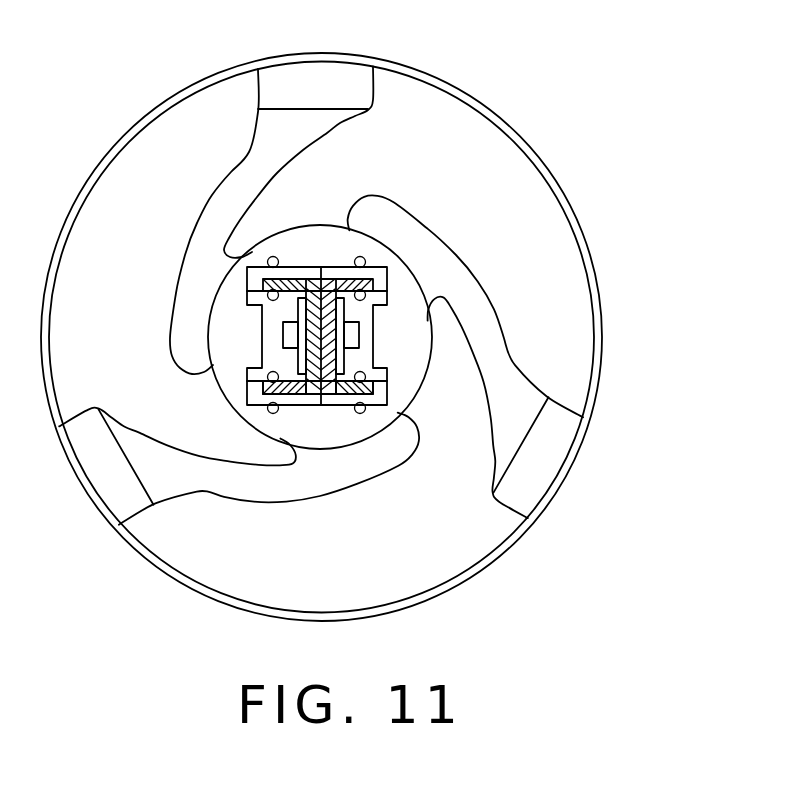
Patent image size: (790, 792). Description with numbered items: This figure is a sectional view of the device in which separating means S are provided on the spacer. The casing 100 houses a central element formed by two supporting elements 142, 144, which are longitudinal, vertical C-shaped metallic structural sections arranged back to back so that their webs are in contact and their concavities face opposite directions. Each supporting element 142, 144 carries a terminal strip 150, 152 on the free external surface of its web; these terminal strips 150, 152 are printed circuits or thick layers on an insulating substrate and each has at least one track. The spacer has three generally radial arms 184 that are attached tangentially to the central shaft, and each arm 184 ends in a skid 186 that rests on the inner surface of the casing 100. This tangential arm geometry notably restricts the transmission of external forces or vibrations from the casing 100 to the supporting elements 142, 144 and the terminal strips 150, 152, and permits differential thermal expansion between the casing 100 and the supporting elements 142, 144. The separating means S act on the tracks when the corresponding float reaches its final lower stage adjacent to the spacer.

The casing 100 is at (498, 118).
The arms 184 is at (217, 203).
The skid 186 is at (363, 89).
The supporting element 142 is at (302, 401).
The supporting element 144 is at (342, 399).
The terminal strip 150 is at (305, 366).
The terminal strip 152 is at (344, 358).
The separating means S is at (355, 317).